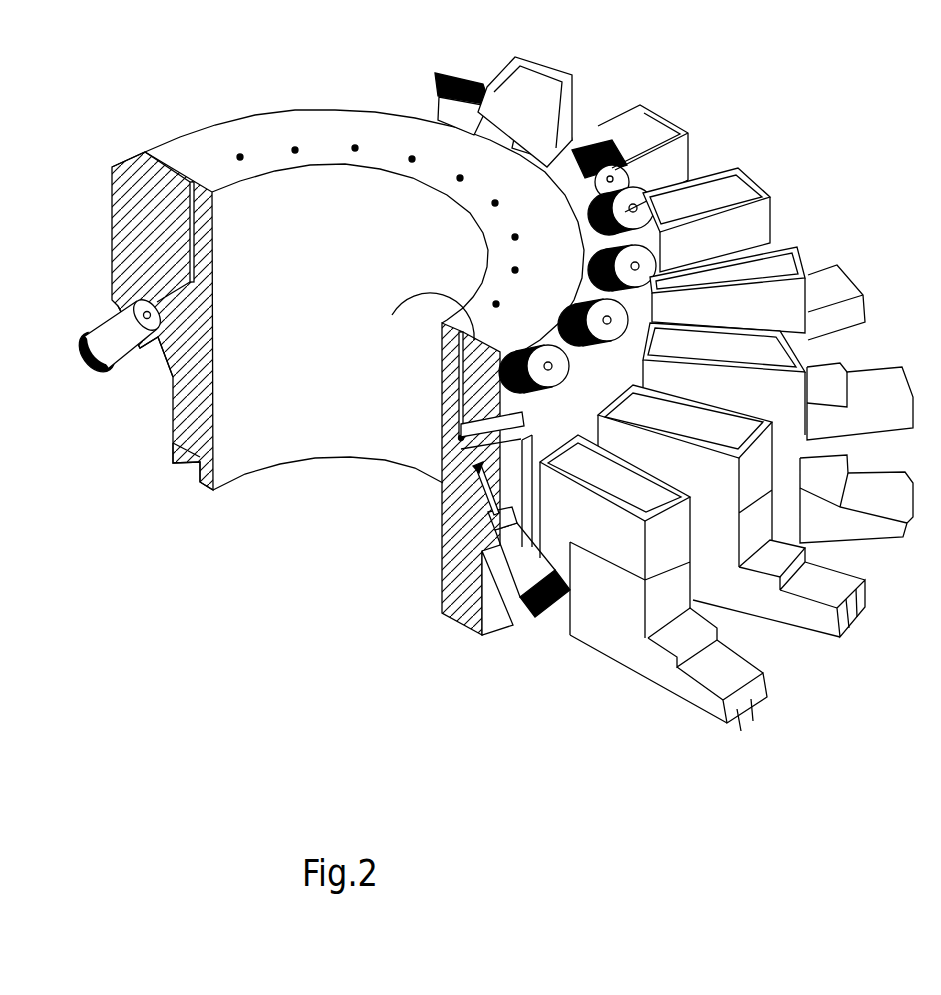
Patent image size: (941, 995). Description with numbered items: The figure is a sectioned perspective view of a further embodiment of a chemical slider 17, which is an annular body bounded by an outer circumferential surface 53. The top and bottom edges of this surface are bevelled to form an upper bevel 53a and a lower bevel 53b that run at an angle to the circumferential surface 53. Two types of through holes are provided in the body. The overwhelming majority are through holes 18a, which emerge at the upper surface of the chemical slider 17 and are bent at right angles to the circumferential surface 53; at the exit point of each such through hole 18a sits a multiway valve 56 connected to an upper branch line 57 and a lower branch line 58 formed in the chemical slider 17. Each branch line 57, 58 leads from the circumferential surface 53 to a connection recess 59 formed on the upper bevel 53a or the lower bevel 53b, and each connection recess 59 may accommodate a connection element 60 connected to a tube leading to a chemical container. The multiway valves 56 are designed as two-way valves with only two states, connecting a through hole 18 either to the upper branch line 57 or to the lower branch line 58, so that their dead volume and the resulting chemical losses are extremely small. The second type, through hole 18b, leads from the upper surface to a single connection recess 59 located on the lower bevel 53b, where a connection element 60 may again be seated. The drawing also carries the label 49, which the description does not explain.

The chemical slider 17 is at (302, 100).
The through hole 18 is at (239, 154).
The through hole 18a is at (457, 400).
The through hole 18b is at (190, 237).
The notch 49 is at (154, 363).
The outer circumferential surface 53 is at (104, 194).
The upper bevel 53a is at (145, 152).
The lower bevel 53b is at (143, 353).
The multiway valve 56 is at (773, 210).
The upper branch line 57 is at (392, 315).
The lower branch line 58 is at (442, 520).
The connection recess 59 is at (443, 580).
The connection element 60 is at (487, 693).